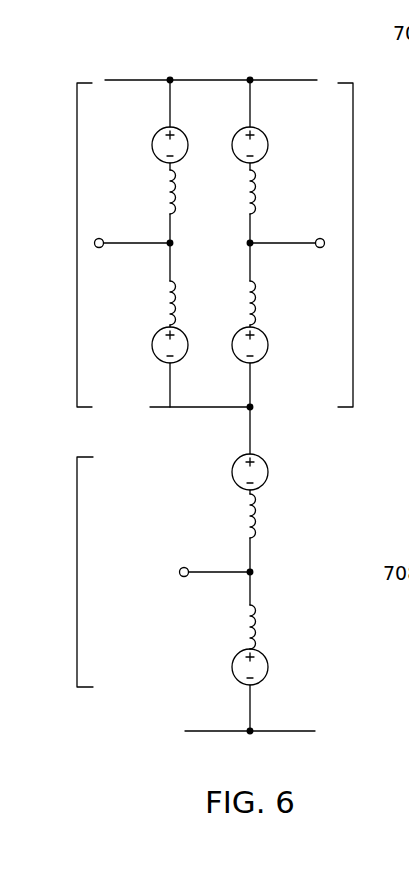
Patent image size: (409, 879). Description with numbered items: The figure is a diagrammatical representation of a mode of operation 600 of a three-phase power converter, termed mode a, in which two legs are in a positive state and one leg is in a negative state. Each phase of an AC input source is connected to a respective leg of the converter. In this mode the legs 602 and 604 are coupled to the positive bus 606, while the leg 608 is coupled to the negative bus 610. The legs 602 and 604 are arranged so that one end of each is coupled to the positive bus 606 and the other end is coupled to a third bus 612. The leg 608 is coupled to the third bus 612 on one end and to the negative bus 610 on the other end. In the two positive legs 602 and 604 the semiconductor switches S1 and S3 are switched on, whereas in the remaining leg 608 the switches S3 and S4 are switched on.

The mode of operation 600 is at (78, 50).
The leg 602 is at (77, 245).
The leg 604 is at (353, 245).
The positive bus 606 is at (297, 80).
The leg 608 is at (77, 572).
The negative bus 610 is at (297, 733).
The third bus 612 is at (202, 411).